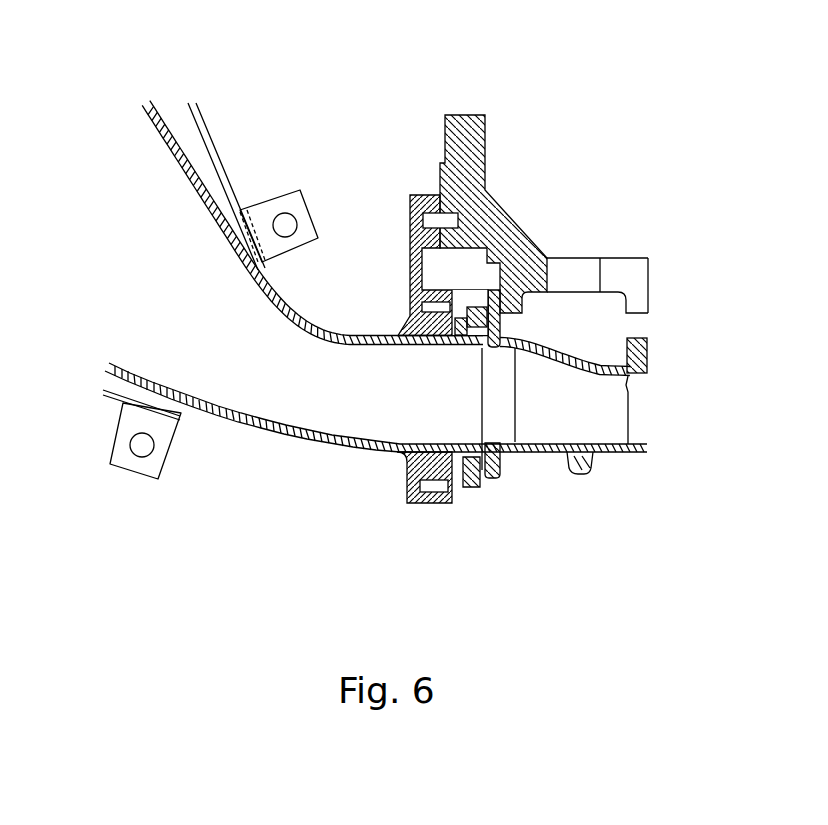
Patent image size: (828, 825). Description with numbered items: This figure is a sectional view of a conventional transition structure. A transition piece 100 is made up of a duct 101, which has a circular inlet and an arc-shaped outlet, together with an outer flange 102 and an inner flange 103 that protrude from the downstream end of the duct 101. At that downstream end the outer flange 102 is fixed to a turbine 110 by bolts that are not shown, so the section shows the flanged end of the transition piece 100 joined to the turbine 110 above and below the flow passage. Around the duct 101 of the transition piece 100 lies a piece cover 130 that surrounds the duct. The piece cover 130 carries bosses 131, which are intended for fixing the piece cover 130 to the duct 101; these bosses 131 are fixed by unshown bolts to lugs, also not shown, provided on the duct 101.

The transition piece 100 is at (272, 436).
The duct 101 is at (313, 316).
The outer flange 102 is at (426, 195).
The inner flange 103 is at (400, 480).
The turbine 110 is at (588, 221).
The piece cover 130 is at (221, 156).
The bosses 131 is at (271, 194).